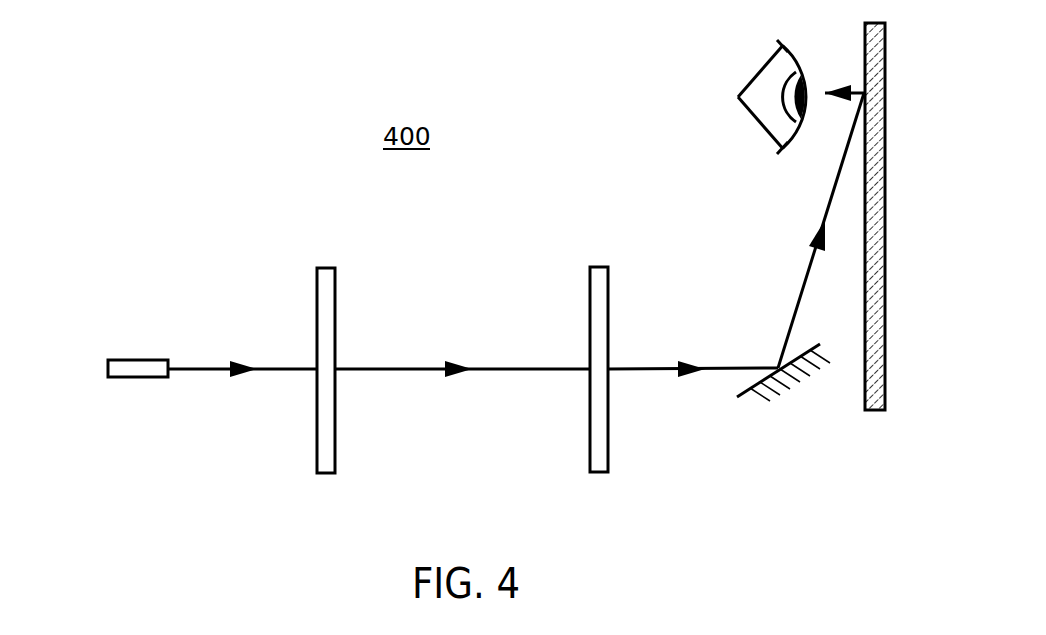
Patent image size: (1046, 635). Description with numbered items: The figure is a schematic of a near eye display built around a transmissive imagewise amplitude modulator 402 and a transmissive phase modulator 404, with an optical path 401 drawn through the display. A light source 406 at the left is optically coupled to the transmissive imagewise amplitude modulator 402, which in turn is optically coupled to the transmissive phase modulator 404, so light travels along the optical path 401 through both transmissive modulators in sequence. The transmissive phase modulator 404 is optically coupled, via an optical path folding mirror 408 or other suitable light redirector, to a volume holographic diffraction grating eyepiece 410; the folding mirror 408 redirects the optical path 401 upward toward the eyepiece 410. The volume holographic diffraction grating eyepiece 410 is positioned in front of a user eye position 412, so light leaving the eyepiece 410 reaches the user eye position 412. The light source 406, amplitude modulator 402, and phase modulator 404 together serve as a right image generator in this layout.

The optical path 401 is at (407, 368).
The transmissive imagewise amplitude modulator 402 is at (317, 447).
The transmissive phase modulator 404 is at (590, 467).
The light source 406 is at (108, 368).
The optical path folding mirror 408 is at (740, 393).
The volume holographic diffraction grating eyepiece 410 is at (885, 52).
The user eye position 412 is at (748, 82).